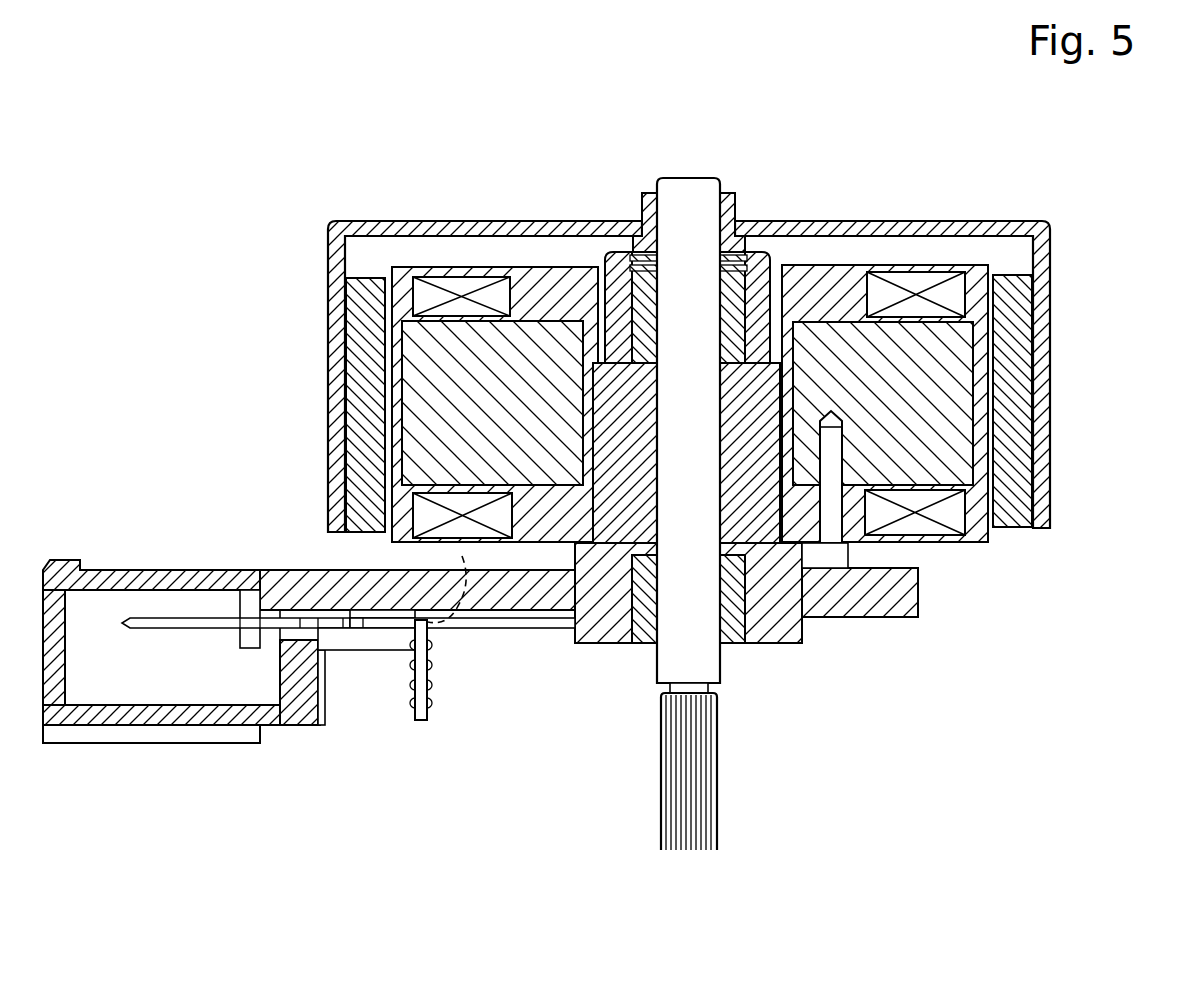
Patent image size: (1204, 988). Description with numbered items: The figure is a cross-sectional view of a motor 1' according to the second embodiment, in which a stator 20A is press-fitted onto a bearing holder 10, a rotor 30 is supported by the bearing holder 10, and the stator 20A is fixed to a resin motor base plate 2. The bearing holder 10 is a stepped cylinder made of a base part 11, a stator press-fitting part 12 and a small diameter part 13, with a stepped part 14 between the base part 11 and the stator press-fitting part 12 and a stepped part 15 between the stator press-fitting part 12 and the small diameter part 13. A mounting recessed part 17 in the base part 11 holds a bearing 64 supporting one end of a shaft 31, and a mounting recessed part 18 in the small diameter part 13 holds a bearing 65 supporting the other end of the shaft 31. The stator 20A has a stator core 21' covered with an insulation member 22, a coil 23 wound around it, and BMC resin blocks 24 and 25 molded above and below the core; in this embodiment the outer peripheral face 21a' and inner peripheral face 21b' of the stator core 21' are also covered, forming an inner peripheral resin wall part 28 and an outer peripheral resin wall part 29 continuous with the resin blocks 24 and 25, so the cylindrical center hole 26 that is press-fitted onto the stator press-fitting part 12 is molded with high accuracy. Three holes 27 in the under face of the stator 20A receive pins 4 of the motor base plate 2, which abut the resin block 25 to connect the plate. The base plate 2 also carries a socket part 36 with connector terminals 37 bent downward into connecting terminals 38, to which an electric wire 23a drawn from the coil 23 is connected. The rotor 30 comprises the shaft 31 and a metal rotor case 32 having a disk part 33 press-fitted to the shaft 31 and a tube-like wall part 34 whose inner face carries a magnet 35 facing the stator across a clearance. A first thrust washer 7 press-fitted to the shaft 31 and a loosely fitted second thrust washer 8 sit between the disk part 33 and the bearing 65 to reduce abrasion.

The motor 1' is at (546, 501).
The motor base plate 2 is at (920, 606).
The pin 4 is at (905, 538).
The first thrust washer 7 is at (637, 236).
The second thrust washer 8 is at (738, 222).
The bearing holder 10 is at (592, 648).
The base part 11 is at (785, 648).
The stator press-fitting part 12 is at (620, 436).
The small diameter part 13 is at (592, 264).
The stepped part 14 is at (812, 576).
The stepped part 15 is at (598, 381).
The mounting recessed part 17 is at (745, 648).
The mounting recessed part 18 is at (720, 292).
The stator 20A is at (980, 546).
The stator core 21' is at (1068, 401).
The outer peripheral face 21a' is at (1071, 483).
The inner peripheral face 21b' is at (717, 453).
The insulation member 22 is at (1043, 291).
The coil 23 is at (924, 282).
The electric wire 23a is at (462, 556).
The resin block 24 is at (520, 278).
The resin block 25 is at (548, 562).
The center hole 26 is at (786, 410).
The hole 27 is at (838, 446).
The inner peripheral resin wall part 28 is at (616, 390).
The outer peripheral resin wall part 29 is at (396, 438).
The rotor 30 is at (1066, 317).
The shaft 31 is at (716, 665).
The rotor case 32 is at (337, 221).
The disk part 33 is at (984, 221).
The tube-like wall part 34 is at (1052, 368).
The magnet 35 is at (353, 375).
The socket part 36 is at (300, 728).
The connector terminal 37 is at (168, 630).
The connecting terminal 38 is at (420, 722).
The bearing 64 is at (643, 648).
The bearing 65 is at (600, 356).